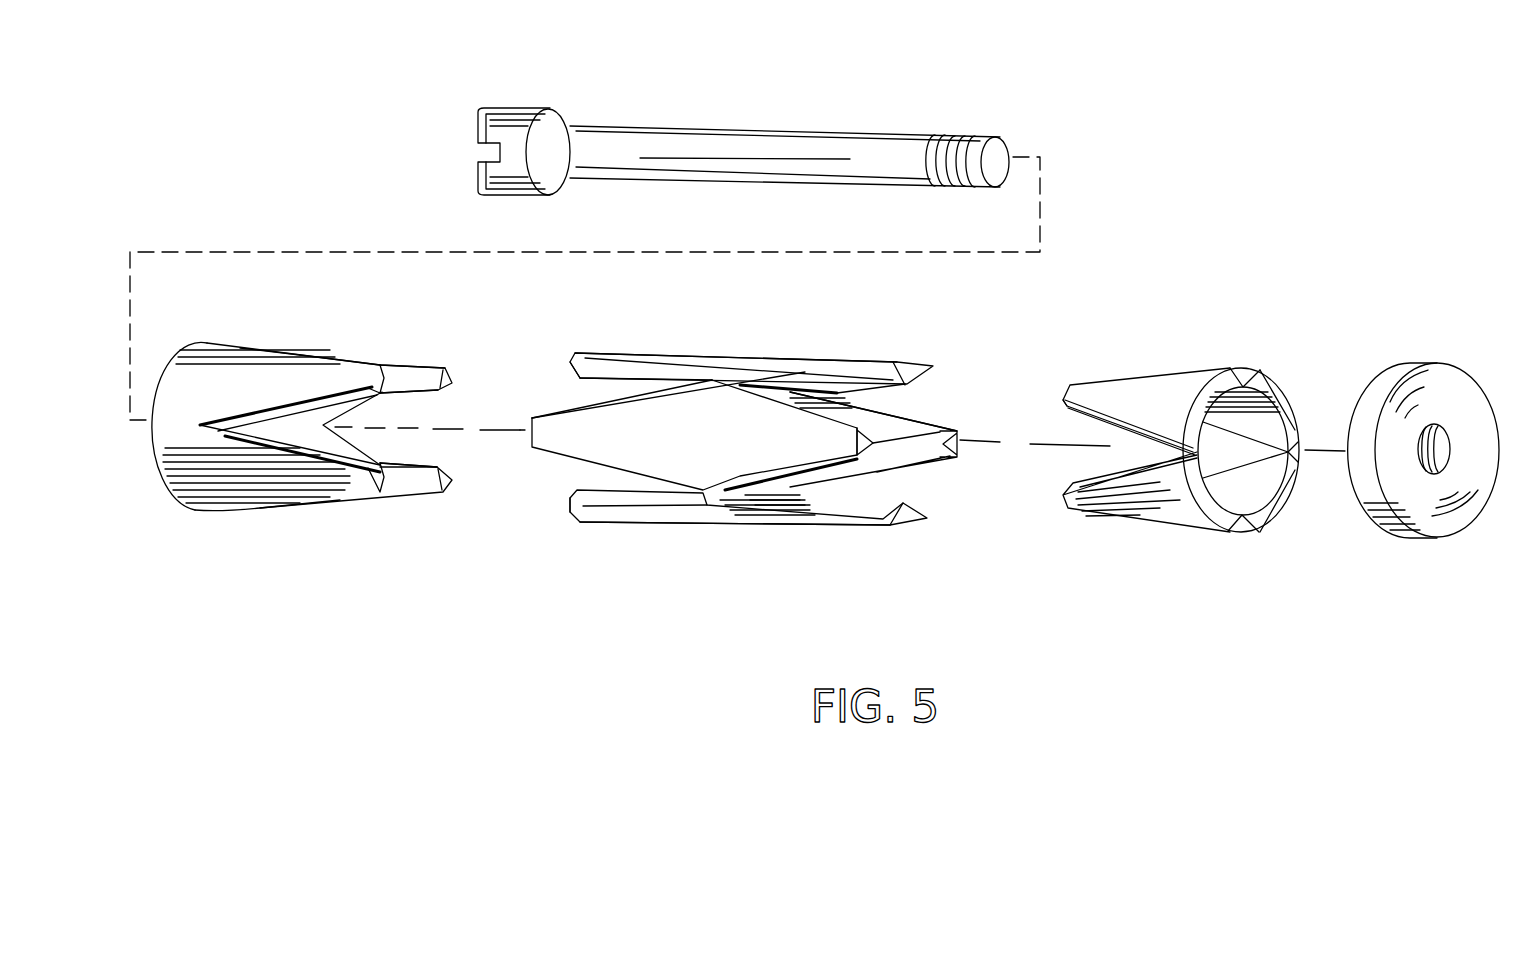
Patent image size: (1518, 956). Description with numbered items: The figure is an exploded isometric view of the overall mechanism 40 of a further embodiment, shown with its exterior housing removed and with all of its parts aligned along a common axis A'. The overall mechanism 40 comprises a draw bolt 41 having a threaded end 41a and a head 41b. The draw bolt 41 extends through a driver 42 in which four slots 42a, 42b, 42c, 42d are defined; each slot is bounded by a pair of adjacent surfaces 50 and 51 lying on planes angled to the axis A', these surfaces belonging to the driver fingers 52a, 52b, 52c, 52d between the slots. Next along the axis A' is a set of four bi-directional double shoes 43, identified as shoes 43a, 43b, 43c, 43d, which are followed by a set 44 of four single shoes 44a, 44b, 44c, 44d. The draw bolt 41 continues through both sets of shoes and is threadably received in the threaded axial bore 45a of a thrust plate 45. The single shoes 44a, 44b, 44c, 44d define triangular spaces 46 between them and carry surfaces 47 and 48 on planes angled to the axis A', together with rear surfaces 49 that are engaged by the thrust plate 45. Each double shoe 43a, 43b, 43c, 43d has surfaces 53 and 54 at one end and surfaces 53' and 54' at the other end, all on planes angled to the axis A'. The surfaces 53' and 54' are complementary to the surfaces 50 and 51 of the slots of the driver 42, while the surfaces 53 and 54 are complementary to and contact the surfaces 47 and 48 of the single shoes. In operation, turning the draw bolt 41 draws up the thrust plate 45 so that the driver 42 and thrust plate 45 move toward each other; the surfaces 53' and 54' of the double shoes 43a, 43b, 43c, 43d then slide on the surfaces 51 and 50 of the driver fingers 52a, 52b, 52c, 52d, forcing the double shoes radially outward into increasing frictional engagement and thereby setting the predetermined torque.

The overall mechanism 40 is at (668, 605).
The draw bolt 41 is at (715, 125).
The threaded end 41a is at (993, 155).
The head 41b is at (510, 108).
The driver 42 is at (255, 330).
The slot 42a is at (385, 358).
The slot 42b is at (422, 407).
The slot 42c is at (401, 507).
The slot 42d is at (294, 424).
The set of bi-directional double shoes 43 is at (765, 342).
The double shoe 43a is at (700, 355).
The double shoe 43b is at (890, 437).
The double shoe 43c is at (707, 512).
The double shoe 43d is at (660, 460).
The set of single shoes 44 is at (1148, 360).
The single shoe 44a is at (1100, 393).
The single shoe 44b is at (1280, 405).
The single shoe 44c is at (1260, 492).
The single shoe 44d is at (1145, 502).
The thrust plate 45 is at (1455, 517).
The threaded axial bore 45a is at (1451, 445).
The triangular space 46 is at (1100, 453).
The surface 47 is at (1243, 378).
The surface 48 is at (1082, 490).
The rear surface 49 is at (1213, 383).
The surface 50 is at (256, 422).
The surface 51 is at (357, 463).
The driver finger 52a is at (337, 355).
The driver finger 52b is at (410, 465).
The driver finger 52c is at (297, 490).
The driver finger 52d is at (273, 360).
The surface 53 is at (764, 437).
The surface 53' is at (564, 338).
The surface 54 is at (875, 438).
The surface 54' is at (550, 529).
The axis A' is at (737, 304).